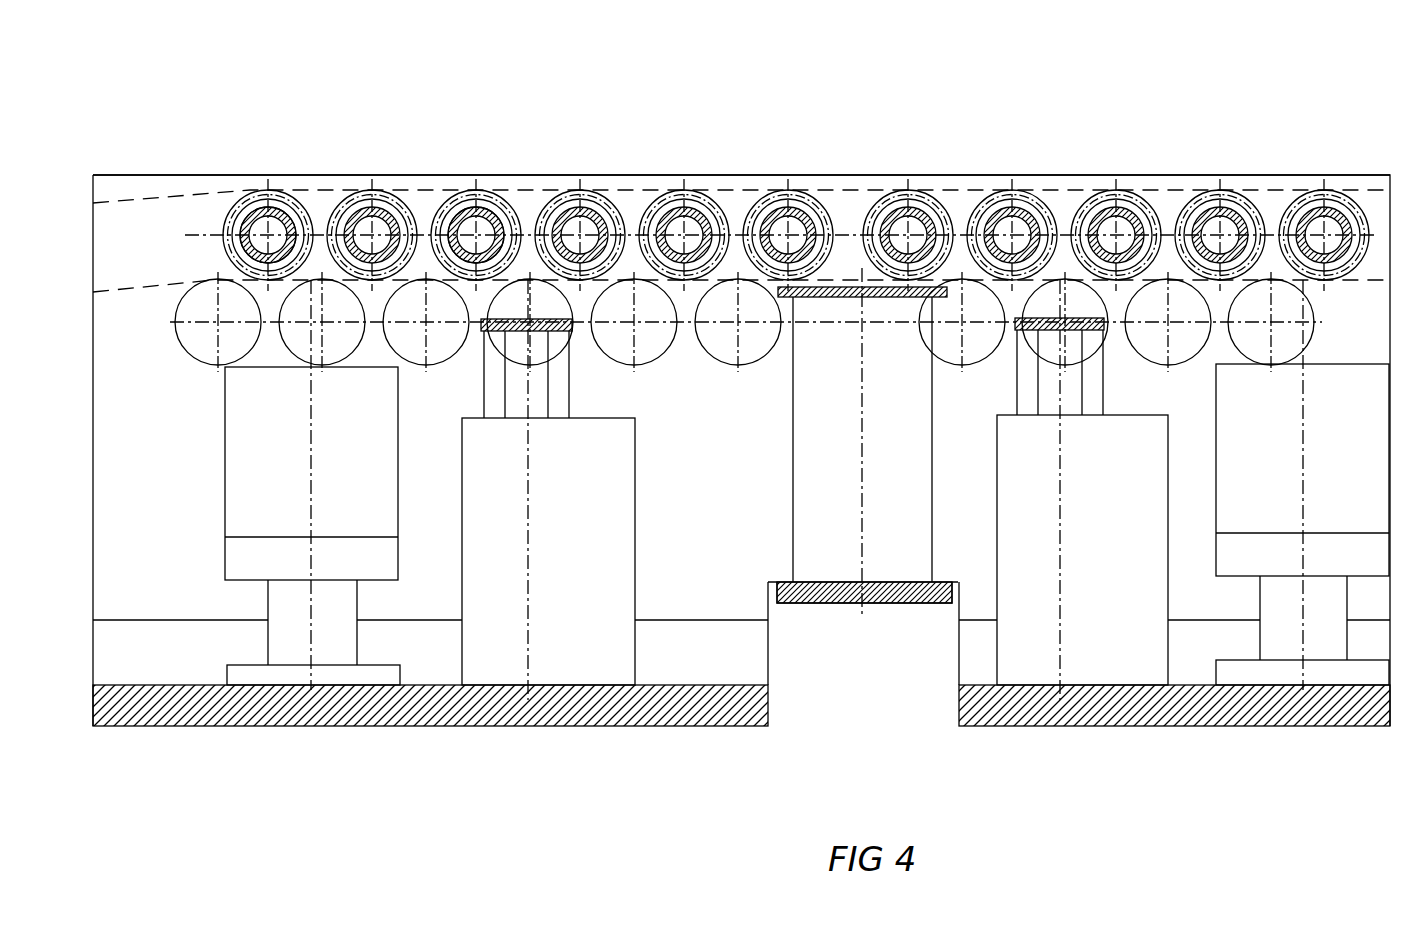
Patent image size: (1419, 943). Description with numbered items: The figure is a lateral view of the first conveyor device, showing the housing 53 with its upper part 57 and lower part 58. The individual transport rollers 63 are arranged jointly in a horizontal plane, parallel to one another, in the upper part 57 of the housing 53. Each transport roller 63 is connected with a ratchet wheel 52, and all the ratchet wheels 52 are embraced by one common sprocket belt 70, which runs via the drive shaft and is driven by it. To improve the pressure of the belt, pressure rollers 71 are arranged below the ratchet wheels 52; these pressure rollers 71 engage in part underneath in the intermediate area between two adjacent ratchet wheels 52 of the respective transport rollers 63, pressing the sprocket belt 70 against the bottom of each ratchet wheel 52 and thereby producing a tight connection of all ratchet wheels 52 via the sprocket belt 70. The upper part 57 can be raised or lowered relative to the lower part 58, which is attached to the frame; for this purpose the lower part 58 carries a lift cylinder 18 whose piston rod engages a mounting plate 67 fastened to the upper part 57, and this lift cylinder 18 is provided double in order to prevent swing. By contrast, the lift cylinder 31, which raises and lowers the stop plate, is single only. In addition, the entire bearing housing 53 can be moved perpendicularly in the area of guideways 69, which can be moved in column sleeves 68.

The lift cylinder 18 is at (610, 517).
The lift cylinder 31 is at (810, 465).
The ratchet wheel 52 is at (255, 195).
The housing 53 is at (1000, 130).
The upper part 57 is at (852, 173).
The lower part 58 is at (958, 703).
The transport roller 63 is at (450, 222).
The mounting plate 67 is at (571, 347).
The column sleeve 68 is at (328, 613).
The guideway 69 is at (245, 458).
The sprocket belt 70 is at (152, 282).
The pressure roller 71 is at (750, 333).